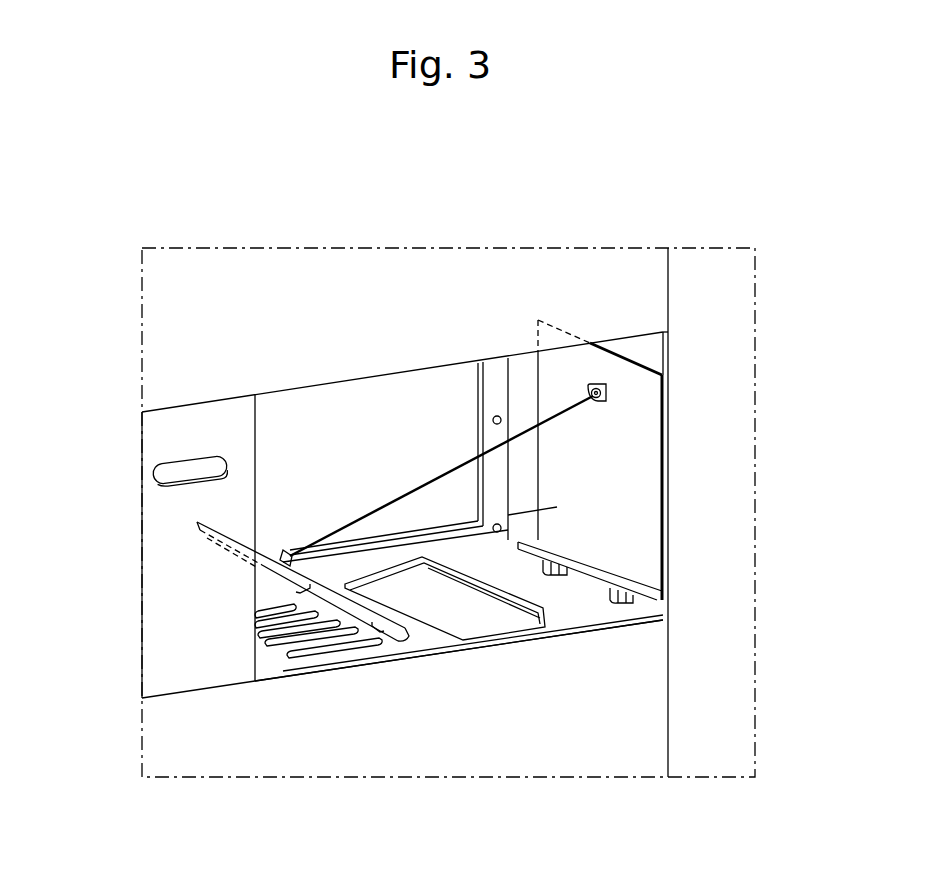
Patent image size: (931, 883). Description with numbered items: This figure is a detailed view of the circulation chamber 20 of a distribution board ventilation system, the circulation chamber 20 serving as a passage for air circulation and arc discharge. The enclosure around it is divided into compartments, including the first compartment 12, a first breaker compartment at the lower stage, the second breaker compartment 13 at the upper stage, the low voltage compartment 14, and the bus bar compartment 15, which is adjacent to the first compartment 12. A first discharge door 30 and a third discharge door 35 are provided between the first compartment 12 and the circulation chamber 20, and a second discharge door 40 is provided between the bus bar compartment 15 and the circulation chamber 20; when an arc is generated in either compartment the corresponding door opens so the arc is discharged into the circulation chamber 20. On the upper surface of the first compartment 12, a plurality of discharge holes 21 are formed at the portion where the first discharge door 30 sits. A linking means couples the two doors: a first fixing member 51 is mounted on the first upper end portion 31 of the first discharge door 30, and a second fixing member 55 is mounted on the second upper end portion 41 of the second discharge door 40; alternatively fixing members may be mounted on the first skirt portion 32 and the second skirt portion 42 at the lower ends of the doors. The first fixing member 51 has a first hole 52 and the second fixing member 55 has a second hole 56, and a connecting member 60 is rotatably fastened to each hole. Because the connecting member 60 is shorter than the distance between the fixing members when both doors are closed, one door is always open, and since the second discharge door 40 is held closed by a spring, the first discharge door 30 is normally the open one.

The first compartment 12 is at (607, 742).
The second breaker compartment 13 is at (212, 330).
The low voltage compartment 14 is at (160, 437).
The bus bar compartment 15 is at (718, 308).
The circulation chamber 20 is at (301, 439).
The discharge holes 21 is at (291, 657).
The first discharge door 30 is at (237, 686).
The first upper end portion 31 is at (280, 577).
The first skirt portion 32 is at (397, 627).
The third discharge door 35 is at (493, 622).
The second discharge door 40 is at (663, 396).
The second upper end portion 41 is at (640, 481).
The second skirt portion 42 is at (652, 587).
The first fixing member 51 is at (282, 556).
The first hole 52 is at (280, 568).
The second fixing member 55 is at (606, 393).
The second hole 56 is at (600, 396).
The connecting member 60 is at (455, 466).